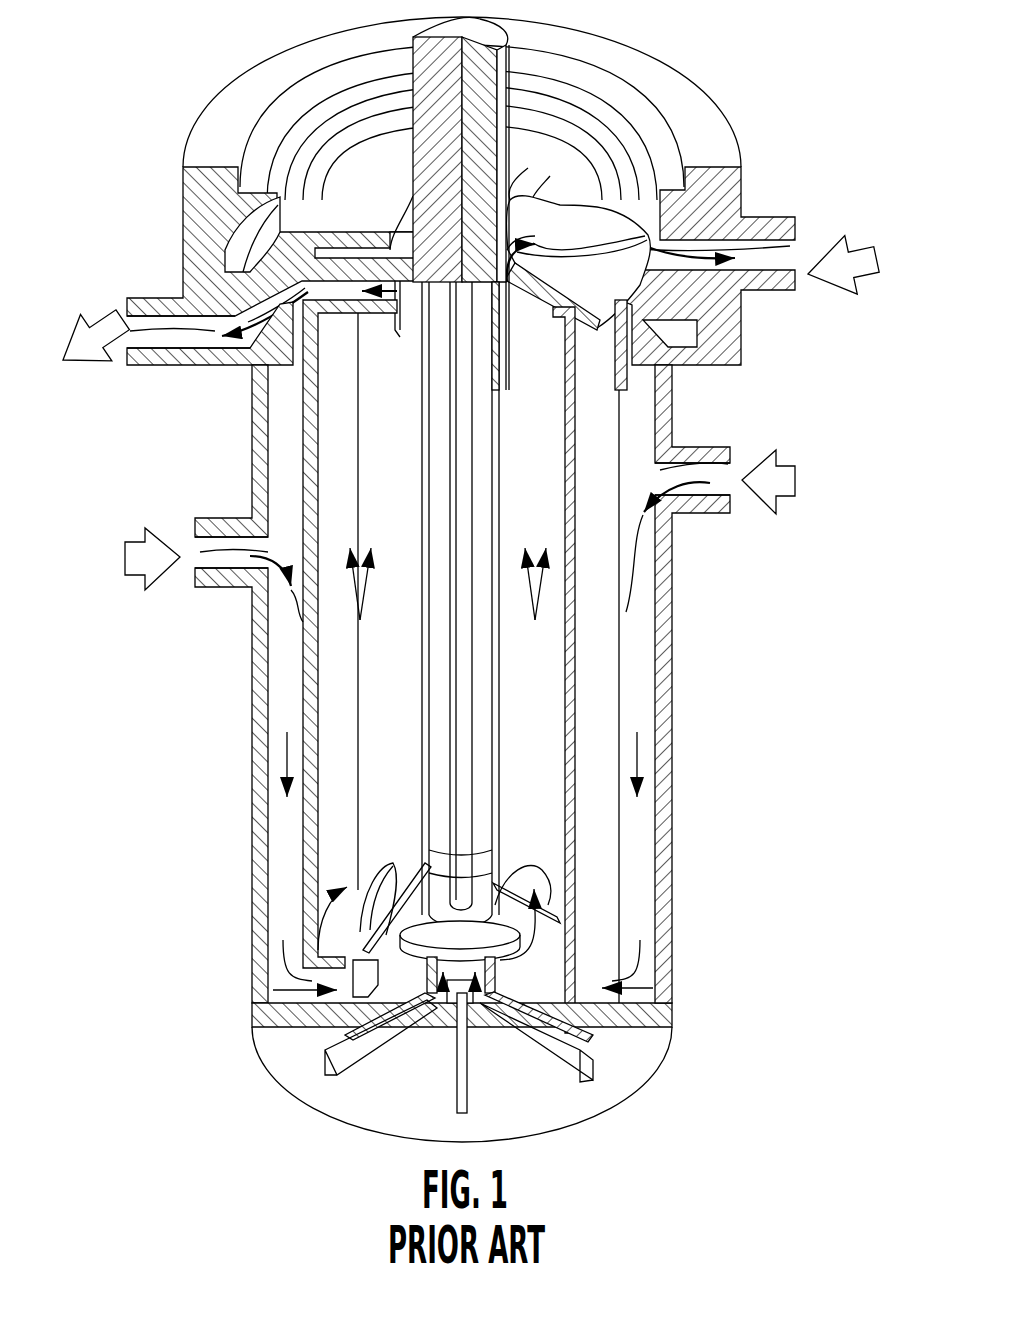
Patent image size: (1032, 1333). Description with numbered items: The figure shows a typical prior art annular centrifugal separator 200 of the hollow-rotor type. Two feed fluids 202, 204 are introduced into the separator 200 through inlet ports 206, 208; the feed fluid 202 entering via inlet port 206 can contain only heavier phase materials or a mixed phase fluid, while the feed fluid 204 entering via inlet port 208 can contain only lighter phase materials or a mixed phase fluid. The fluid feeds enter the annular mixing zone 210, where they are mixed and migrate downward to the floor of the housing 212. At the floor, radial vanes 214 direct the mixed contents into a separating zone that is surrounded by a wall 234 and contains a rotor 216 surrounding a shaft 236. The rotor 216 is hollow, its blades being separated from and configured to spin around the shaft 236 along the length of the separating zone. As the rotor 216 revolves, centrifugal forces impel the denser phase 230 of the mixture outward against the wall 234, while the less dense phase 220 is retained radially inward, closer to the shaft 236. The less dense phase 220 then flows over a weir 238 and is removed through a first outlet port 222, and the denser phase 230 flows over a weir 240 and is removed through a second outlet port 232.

The annular centrifugal separator 200 is at (781, 78).
The feed fluid 202 is at (783, 455).
The feed fluid 204 is at (140, 533).
The inlet port 206 is at (718, 497).
The inlet port 208 is at (218, 563).
The annular mixing zone 210 is at (303, 913).
The housing 212 is at (250, 838).
The radial vanes 214 is at (595, 1062).
The rotor 216 is at (473, 918).
The less dense phase 220 is at (92, 320).
The first outlet port 222 is at (177, 338).
The denser phase 230 is at (850, 257).
The second outlet port 232 is at (768, 247).
The wall 234 is at (357, 710).
The shaft 236 is at (466, 712).
The weir 238 is at (393, 312).
The weir 240 is at (643, 280).